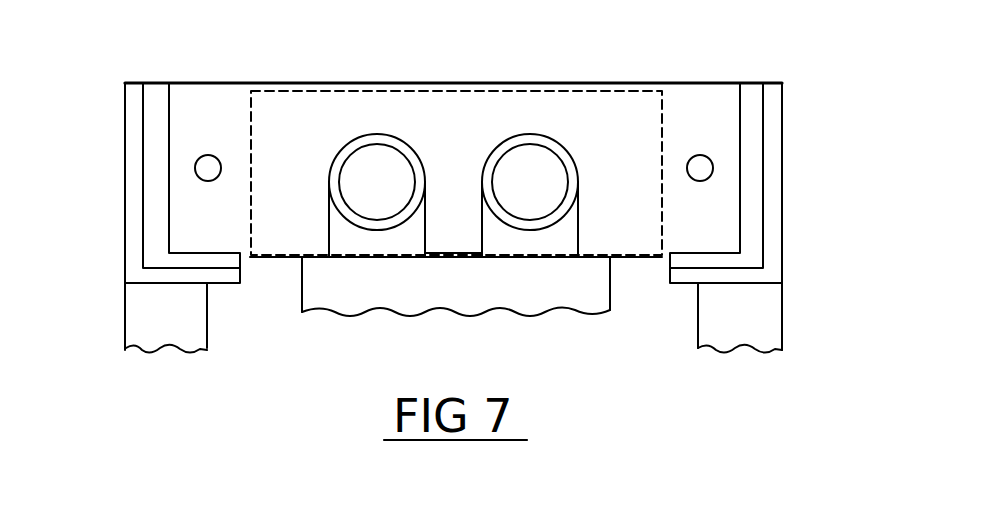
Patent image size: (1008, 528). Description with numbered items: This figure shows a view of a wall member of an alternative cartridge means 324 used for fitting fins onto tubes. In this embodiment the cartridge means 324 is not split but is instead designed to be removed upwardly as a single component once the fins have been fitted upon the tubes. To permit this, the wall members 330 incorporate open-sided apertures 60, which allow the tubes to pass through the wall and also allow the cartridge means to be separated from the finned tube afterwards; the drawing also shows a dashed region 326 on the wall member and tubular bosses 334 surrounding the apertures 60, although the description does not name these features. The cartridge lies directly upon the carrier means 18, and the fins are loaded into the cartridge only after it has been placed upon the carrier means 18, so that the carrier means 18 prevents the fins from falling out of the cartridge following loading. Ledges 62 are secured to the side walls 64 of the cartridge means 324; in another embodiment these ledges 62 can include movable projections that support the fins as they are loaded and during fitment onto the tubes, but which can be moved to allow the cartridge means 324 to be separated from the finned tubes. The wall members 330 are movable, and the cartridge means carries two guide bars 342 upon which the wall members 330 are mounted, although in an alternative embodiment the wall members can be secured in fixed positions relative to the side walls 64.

The carrier means 18 is at (560, 288).
The open-sided apertures 60 is at (482, 230).
The ledges 62 is at (227, 278).
The side walls 64 is at (132, 153).
The cartridge means 324 is at (800, 90).
The mounting plate region 326 is at (485, 115).
The wall members 330 is at (228, 112).
The tubular bosses 334 is at (372, 137).
The guide bars 342 is at (206, 156).